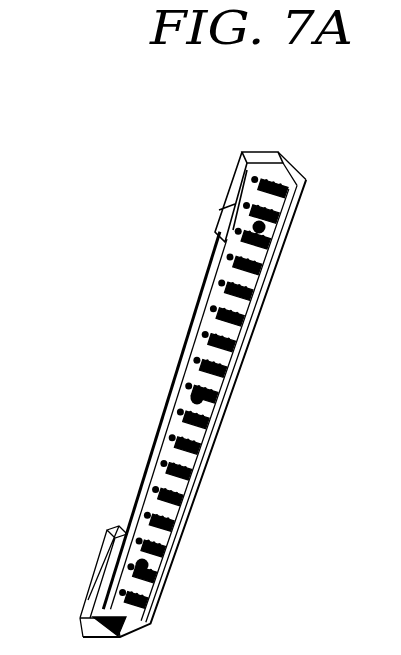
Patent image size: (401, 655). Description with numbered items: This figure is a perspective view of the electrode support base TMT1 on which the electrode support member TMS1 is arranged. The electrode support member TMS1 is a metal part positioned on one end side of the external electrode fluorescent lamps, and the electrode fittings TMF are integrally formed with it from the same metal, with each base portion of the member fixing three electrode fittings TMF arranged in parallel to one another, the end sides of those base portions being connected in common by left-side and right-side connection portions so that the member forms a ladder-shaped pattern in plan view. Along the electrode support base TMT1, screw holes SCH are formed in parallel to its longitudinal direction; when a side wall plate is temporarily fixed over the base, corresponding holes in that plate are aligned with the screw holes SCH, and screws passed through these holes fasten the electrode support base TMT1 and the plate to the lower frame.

The electrode support member TMS1 is at (276, 180).
The screw hole SCH is at (253, 226).
The electrode support base TMT1 is at (247, 382).
The electrode fitting TMF is at (153, 460).